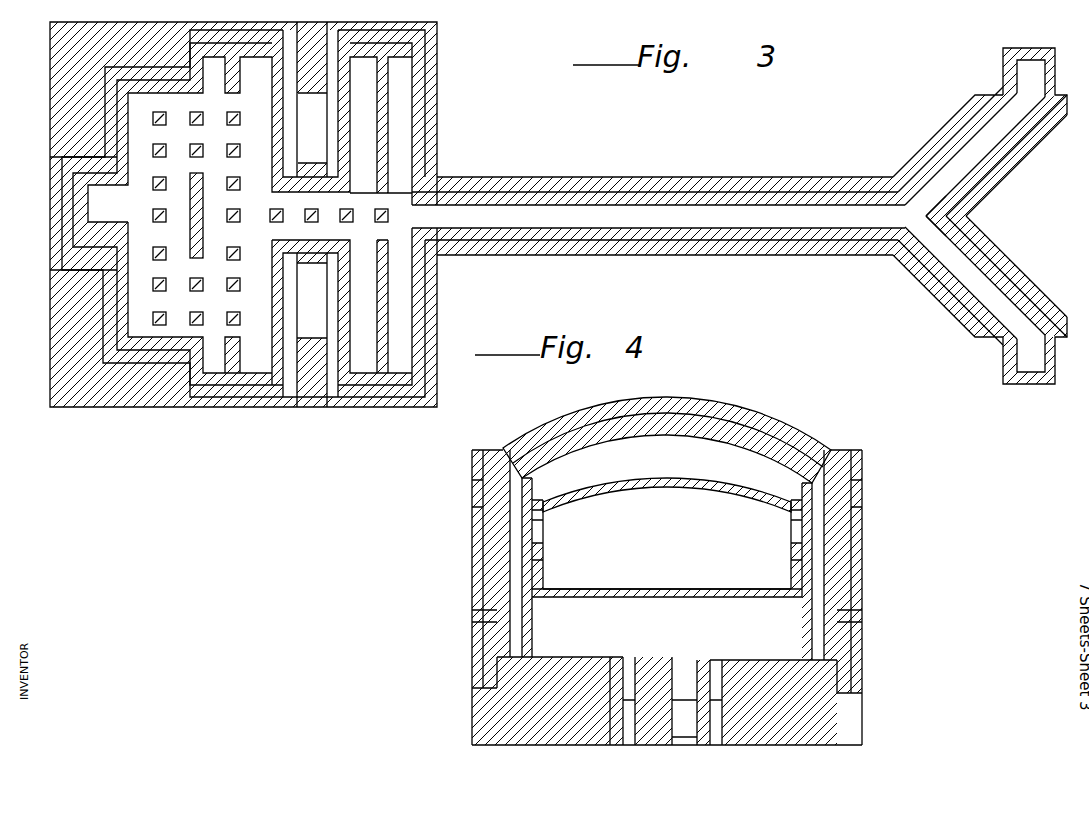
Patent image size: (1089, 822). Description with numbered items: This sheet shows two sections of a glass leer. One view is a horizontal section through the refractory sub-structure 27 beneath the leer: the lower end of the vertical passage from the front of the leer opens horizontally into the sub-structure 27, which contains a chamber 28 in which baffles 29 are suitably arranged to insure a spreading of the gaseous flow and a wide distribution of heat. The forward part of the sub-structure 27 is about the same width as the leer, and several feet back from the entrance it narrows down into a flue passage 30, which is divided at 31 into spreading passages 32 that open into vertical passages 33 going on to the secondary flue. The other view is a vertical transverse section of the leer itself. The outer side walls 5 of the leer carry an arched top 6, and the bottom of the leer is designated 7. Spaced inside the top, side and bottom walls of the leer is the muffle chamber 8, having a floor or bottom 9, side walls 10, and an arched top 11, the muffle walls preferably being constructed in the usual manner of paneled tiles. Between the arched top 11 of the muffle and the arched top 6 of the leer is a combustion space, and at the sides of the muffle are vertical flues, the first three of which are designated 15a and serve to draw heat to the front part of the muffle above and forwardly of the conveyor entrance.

In FIG. 3, the sub-structure 27 is at (162, 398).
In FIG. 3, the chamber 28 is at (117, 157).
In FIG. 3, the baffles 29 is at (197, 248).
In FIG. 3, the flue passage 30 is at (658, 216).
In FIG. 3, the dividing point 31 is at (924, 216).
In FIG. 3, the spreading passages 32 is at (980, 216).
In FIG. 3, the vertical passages 33 is at (1035, 216).
In FIG. 4, the outer side walls 5 is at (471, 561).
In FIG. 4, the arched top 6 is at (693, 399).
In FIG. 4, the bottom 7 is at (557, 727).
In FIG. 4, the muffle chamber 8 is at (667, 558).
In FIG. 4, the floor 9 is at (611, 590).
In FIG. 4, the side walls 10 is at (541, 552).
In FIG. 4, the arched top 11 is at (684, 482).
In FIG. 4, the first three side flues 15a is at (515, 542).